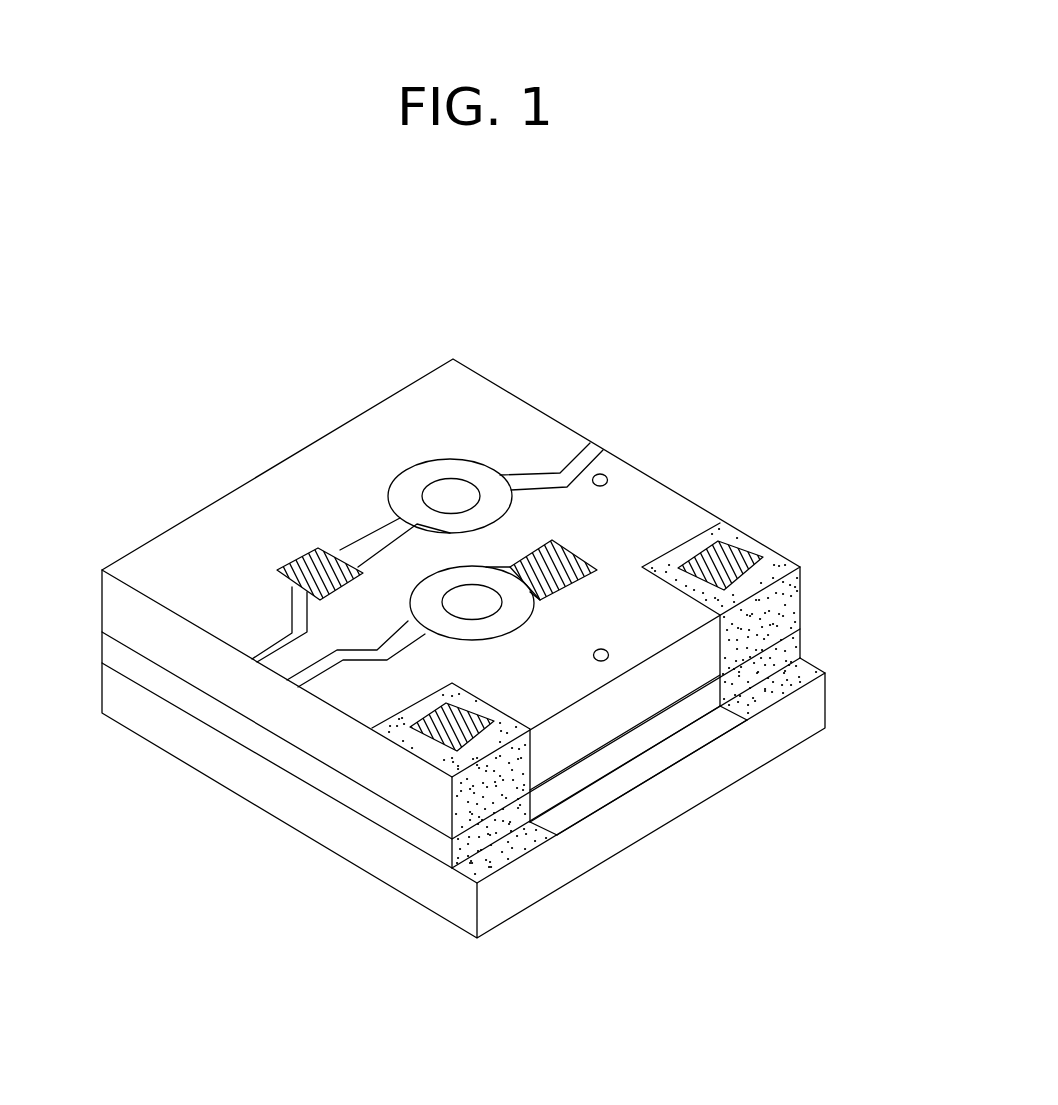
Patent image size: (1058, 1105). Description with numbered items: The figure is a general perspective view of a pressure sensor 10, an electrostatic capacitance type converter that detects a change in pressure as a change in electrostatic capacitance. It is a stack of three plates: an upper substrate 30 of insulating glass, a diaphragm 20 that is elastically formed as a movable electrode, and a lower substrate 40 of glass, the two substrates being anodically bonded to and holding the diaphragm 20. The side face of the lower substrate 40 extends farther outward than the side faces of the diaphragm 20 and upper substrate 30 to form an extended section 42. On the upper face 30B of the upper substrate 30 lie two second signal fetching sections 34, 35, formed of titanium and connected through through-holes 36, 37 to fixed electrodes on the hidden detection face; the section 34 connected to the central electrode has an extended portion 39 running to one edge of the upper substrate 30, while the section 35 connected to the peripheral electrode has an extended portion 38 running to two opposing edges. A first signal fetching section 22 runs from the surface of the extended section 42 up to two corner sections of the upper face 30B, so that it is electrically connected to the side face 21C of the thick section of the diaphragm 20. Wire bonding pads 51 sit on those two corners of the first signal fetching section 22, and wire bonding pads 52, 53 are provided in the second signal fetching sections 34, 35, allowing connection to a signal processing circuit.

The pressure sensor 10 is at (702, 402).
The diaphragm 20 is at (112, 649).
The side face of the thick section 21C is at (687, 708).
The first signal fetching section 22 is at (790, 607).
The upper substrate 30 is at (112, 596).
The upper face 30B is at (588, 675).
The second signal fetching section 34 is at (497, 622).
The second signal fetching section 35 is at (416, 470).
The through-hole 36 is at (481, 597).
The through-hole 37 is at (447, 482).
The extended portion 38 is at (588, 450).
The extended portion 39 is at (315, 672).
The lower substrate 40 is at (112, 699).
The extended section 42 is at (615, 783).
The wire bonding pads 51 is at (730, 562).
The wire bonding pad 52 is at (583, 553).
The wire bonding pad 53 is at (313, 548).